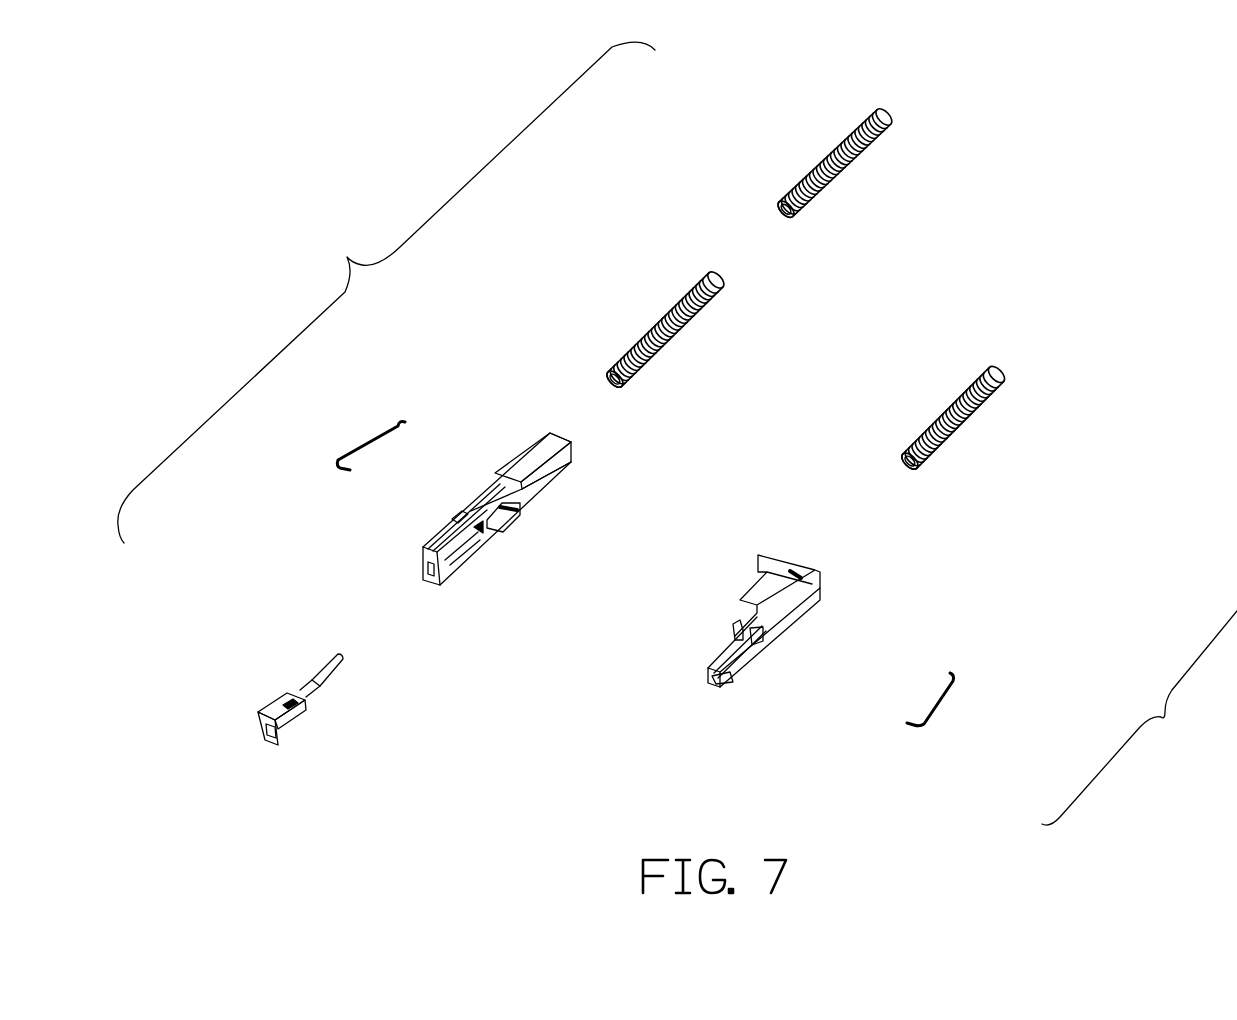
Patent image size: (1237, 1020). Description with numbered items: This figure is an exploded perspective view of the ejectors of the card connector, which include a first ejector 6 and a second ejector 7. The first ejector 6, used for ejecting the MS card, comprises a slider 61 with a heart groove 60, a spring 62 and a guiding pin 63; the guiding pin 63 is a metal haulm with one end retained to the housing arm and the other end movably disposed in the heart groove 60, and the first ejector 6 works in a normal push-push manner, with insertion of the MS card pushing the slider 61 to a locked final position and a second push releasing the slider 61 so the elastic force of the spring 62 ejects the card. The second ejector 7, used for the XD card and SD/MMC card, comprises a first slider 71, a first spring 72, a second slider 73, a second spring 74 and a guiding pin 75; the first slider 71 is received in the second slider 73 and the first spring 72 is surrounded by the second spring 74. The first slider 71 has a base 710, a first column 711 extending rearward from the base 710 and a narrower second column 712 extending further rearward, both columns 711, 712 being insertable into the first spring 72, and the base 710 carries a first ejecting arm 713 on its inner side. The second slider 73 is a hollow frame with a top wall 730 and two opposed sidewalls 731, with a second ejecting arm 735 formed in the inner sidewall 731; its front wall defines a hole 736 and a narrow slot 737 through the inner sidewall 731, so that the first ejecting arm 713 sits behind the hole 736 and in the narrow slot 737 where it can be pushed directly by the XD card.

The first ejector 6 is at (966, 635).
The second ejector 7 is at (386, 292).
The heart groove 60 is at (737, 675).
The slider 61 is at (778, 575).
The spring 62 is at (963, 418).
The guiding pin 63 is at (937, 712).
The first slider 71 is at (306, 719).
The first spring 72 is at (658, 330).
The second slider 73 is at (500, 503).
The second spring 74 is at (824, 165).
The guiding pin 75 is at (368, 438).
The base 710 is at (275, 705).
The first column 711 is at (317, 697).
The second column 712 is at (345, 665).
The first ejecting arm 713 is at (278, 745).
The top wall 730 is at (523, 470).
The sidewall 731 is at (552, 467).
The second ejecting arm 735 is at (512, 525).
The hole 736 is at (430, 575).
The narrow slot 737 is at (465, 550).